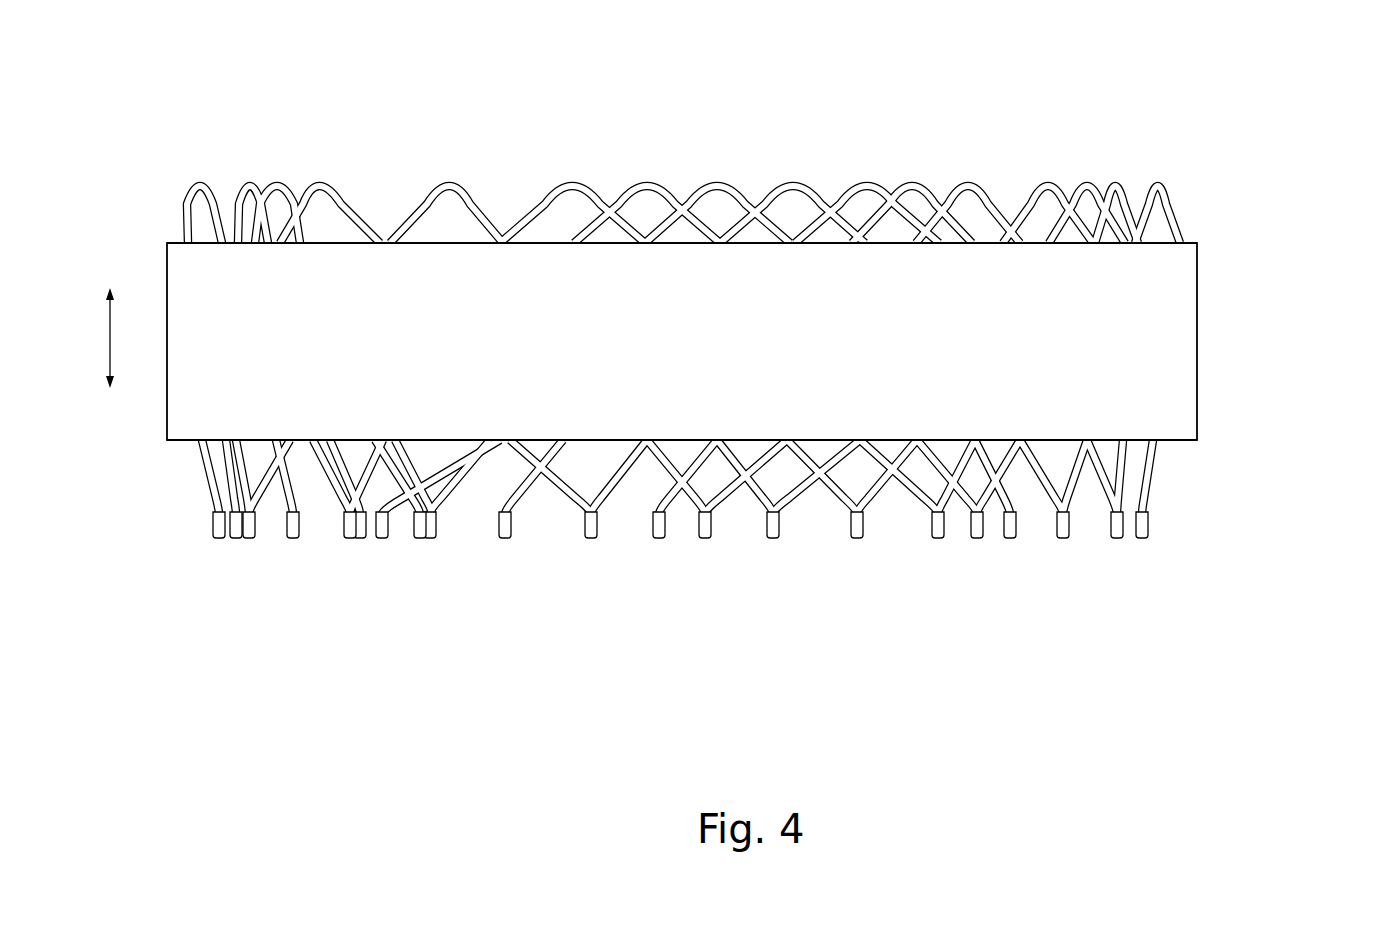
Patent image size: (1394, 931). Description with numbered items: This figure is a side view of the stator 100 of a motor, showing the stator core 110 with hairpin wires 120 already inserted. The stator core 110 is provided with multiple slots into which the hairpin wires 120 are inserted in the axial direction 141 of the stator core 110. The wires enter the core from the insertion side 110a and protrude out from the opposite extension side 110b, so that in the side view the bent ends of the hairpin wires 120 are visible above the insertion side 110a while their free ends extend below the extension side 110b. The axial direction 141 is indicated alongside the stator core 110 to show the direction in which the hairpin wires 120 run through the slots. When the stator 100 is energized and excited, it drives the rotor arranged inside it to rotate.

The stator 100 is at (776, 289).
The stator core 110 is at (776, 343).
The insertion side 110a is at (1191, 227).
The extension side 110b is at (1192, 453).
The hairpin wires 120 is at (788, 184).
The axial direction 141 is at (110, 342).